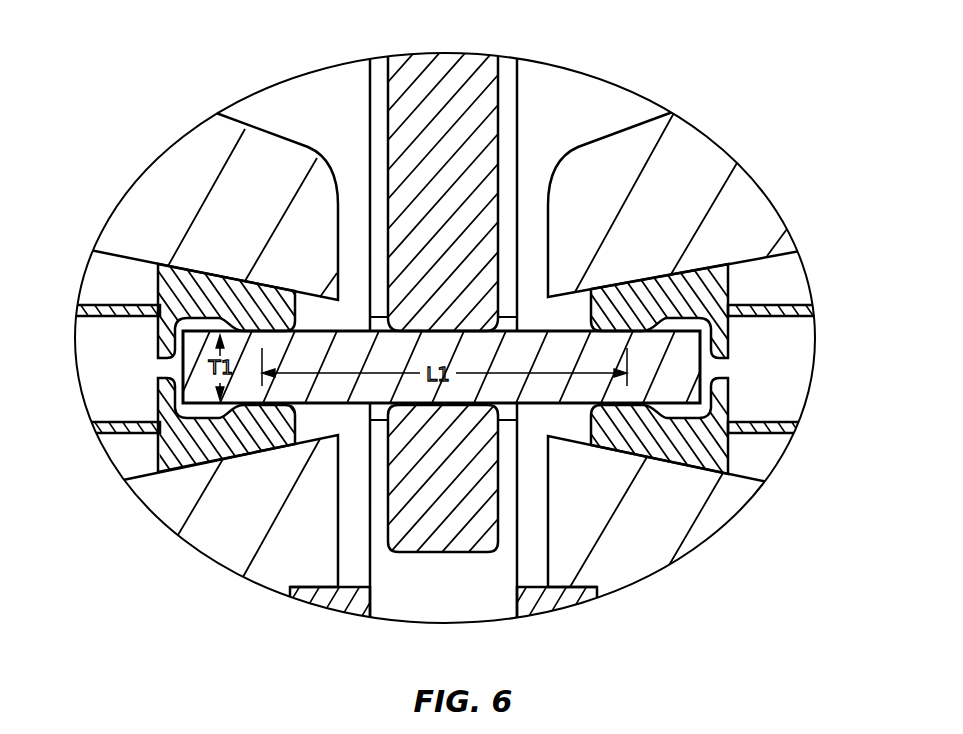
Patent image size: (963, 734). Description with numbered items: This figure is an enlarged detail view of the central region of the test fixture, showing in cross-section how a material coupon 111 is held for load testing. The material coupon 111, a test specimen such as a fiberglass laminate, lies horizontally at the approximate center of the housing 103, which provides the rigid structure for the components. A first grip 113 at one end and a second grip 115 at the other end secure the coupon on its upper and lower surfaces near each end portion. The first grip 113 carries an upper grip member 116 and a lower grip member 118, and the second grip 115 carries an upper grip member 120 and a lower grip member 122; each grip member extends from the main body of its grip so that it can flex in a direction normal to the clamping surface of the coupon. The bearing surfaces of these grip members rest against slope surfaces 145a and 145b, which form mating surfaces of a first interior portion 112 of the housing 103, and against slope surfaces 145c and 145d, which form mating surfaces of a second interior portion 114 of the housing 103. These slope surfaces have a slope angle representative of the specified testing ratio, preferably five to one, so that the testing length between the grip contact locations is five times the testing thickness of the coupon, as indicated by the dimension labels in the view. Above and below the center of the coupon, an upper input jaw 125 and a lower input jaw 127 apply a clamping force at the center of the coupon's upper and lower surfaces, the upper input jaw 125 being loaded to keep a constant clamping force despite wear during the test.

The housing 103 is at (623, 128).
The material coupon 111 is at (345, 332).
The first interior portion 112 is at (112, 262).
The first grip 113 is at (140, 305).
The second interior portion 114 is at (752, 482).
The second grip 115 is at (778, 306).
The upper grip member 116 is at (158, 335).
The lower grip member 118 is at (160, 440).
The upper grip member 120 is at (730, 334).
The lower grip member 122 is at (730, 393).
The upper input jaw 125 is at (500, 118).
The lower input jaw 127 is at (500, 500).
The slope surface 145a is at (211, 265).
The slope surface 145b is at (188, 478).
The slope surface 145c is at (669, 474).
The slope surface 145d is at (634, 272).